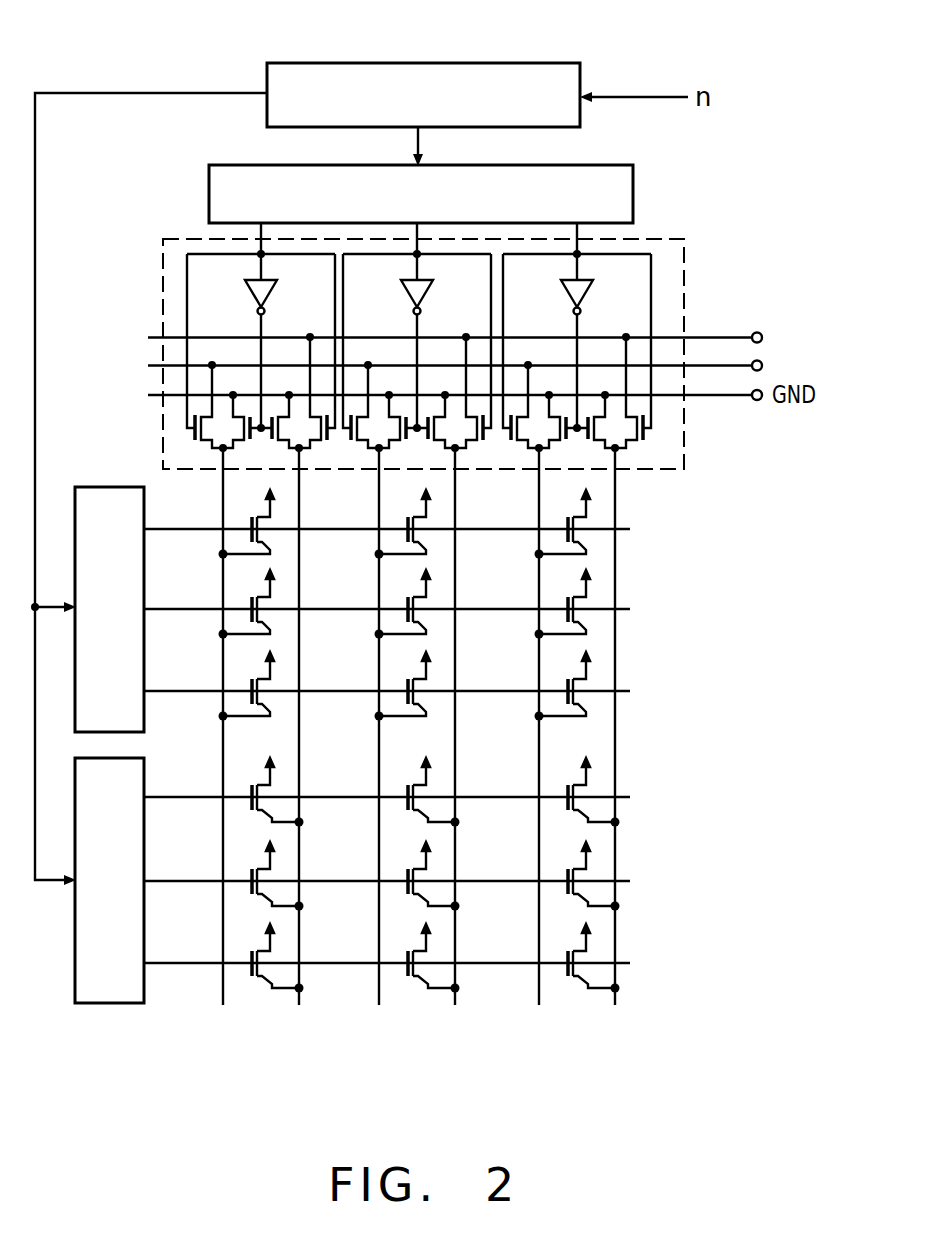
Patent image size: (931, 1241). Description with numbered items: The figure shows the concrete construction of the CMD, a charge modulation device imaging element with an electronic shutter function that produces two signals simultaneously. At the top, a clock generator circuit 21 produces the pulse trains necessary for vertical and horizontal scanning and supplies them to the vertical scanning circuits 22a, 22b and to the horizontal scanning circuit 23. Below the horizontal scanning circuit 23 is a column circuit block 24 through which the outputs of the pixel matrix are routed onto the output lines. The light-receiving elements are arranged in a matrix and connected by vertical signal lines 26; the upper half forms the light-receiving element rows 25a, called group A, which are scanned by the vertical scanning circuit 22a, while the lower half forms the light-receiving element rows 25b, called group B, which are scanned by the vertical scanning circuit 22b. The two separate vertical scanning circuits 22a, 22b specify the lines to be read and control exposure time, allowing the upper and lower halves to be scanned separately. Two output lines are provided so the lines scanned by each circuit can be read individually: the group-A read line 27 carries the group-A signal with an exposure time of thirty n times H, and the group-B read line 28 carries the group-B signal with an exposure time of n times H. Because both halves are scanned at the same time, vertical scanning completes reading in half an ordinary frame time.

The clock generator circuit 21 is at (528, 63).
The vertical scanning circuit 22a is at (107, 487).
The vertical scanning circuit 22b is at (105, 1003).
The horizontal scanning circuit 23 is at (602, 165).
The column selection (readout) circuit 24 is at (663, 240).
The light-receiving element rows 25a is at (632, 520).
The light-receiving element rows 25b is at (632, 790).
The vertical signal lines 26 is at (628, 1012).
The read line 27 is at (723, 365).
The read line 28 is at (708, 337).